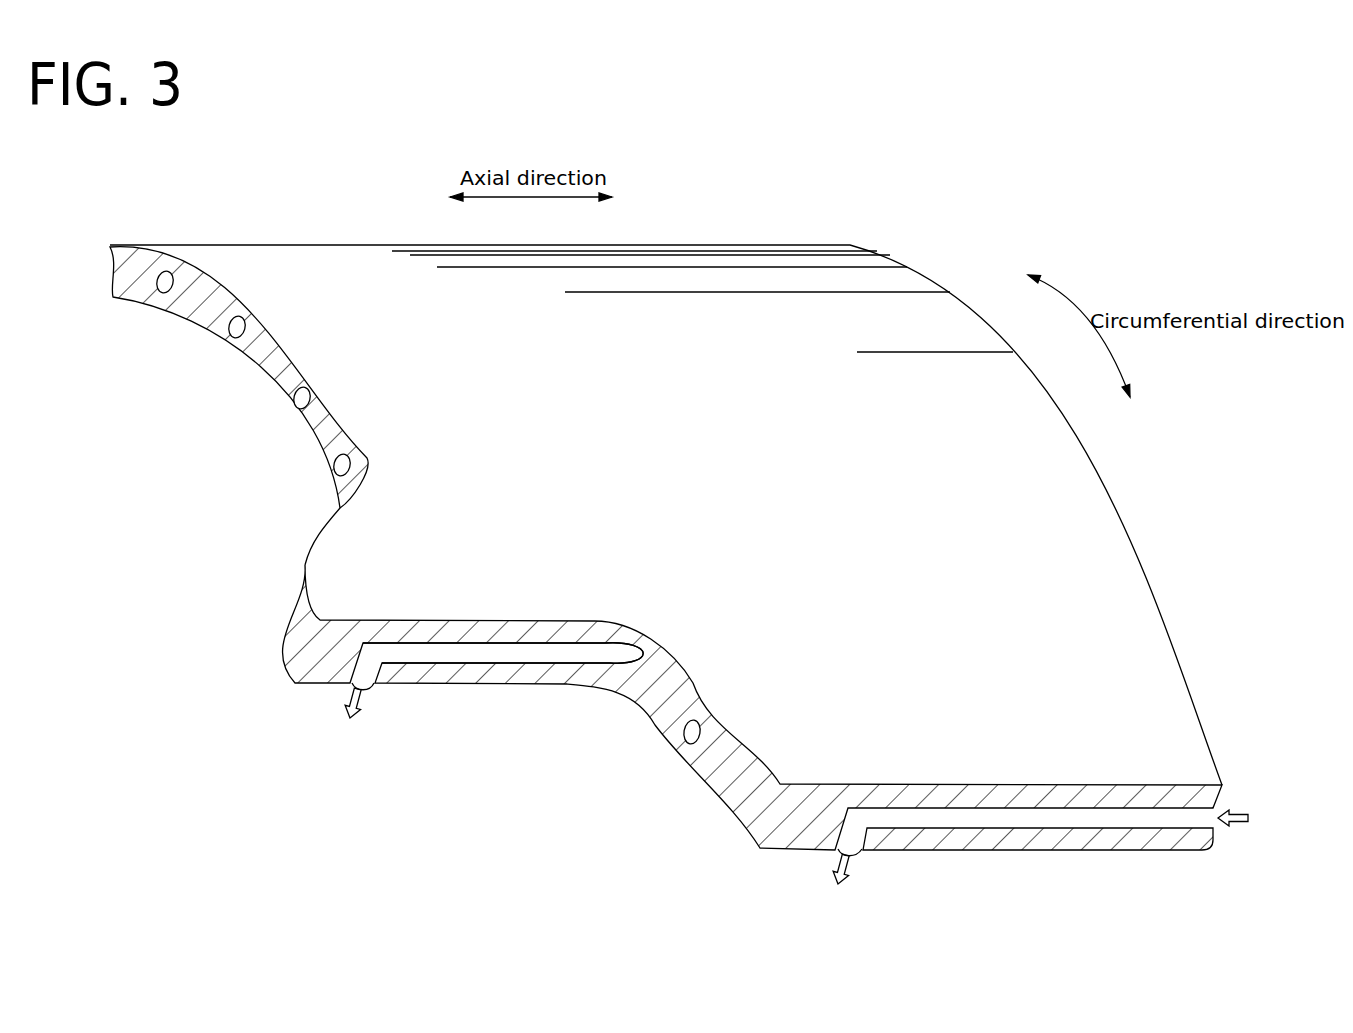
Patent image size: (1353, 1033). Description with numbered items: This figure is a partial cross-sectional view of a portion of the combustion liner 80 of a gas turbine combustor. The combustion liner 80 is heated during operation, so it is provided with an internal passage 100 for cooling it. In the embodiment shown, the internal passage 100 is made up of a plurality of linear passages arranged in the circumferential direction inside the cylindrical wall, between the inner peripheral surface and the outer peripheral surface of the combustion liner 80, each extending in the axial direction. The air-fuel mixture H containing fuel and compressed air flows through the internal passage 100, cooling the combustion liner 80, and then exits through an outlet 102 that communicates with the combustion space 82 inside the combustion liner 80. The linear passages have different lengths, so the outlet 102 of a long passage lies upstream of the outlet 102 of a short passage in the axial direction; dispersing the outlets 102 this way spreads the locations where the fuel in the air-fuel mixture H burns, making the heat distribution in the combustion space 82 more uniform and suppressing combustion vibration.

The combustion liner 80 is at (323, 283).
The combustion space 82 is at (511, 742).
The internal passage 100 is at (334, 466).
The outlet 102 is at (365, 688).
The air-fuel mixture H is at (346, 703).